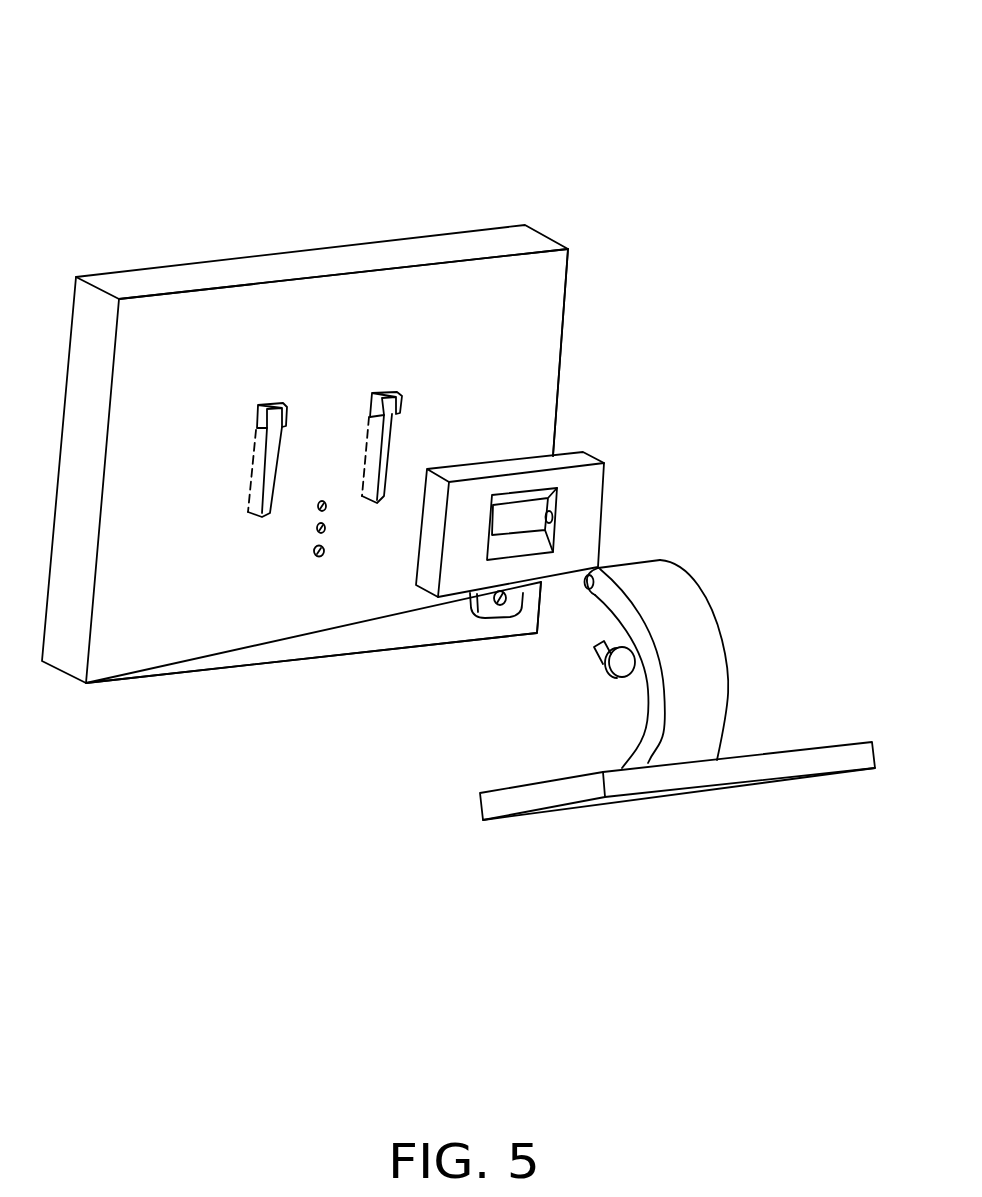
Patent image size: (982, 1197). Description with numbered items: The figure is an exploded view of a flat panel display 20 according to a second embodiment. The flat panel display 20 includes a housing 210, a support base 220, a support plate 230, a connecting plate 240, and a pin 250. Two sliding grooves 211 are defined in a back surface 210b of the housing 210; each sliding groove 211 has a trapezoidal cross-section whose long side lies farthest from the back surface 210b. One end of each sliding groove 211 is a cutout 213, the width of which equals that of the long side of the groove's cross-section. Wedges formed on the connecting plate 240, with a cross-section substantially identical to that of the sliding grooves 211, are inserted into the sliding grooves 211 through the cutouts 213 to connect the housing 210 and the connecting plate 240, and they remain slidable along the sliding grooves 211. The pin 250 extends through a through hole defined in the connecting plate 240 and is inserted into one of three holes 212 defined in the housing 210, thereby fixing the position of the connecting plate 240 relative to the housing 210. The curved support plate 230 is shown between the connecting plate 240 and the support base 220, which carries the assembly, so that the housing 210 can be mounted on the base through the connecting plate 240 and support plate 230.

The flat panel display 20 is at (513, 57).
The housing 210 is at (535, 240).
The back surface 210b is at (332, 297).
The sliding grooves 211 is at (387, 443).
The cutout 213 is at (385, 402).
The holes 212 is at (321, 557).
The connecting plate 240 is at (601, 451).
The support plate 230 is at (719, 613).
The pin 250 is at (620, 668).
The support base 220 is at (800, 760).